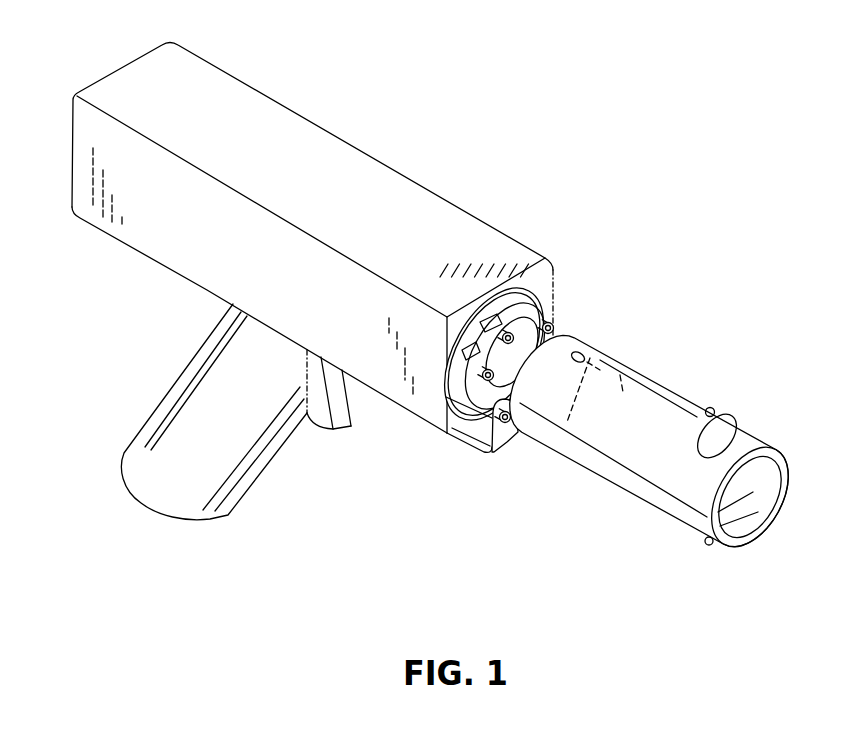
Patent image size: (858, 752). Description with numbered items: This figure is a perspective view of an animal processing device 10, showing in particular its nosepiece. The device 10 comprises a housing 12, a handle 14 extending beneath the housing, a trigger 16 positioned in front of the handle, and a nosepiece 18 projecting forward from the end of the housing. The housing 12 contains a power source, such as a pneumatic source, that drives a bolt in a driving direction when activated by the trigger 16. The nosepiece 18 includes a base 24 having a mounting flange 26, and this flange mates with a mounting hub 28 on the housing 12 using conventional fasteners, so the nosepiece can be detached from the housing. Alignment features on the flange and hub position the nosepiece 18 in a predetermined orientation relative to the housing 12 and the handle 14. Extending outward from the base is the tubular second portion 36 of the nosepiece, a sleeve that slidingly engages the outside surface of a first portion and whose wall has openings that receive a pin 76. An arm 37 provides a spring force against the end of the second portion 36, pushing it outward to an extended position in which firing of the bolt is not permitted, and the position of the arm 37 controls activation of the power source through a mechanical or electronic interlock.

The device 10 is at (497, 165).
The housing 12 is at (287, 137).
The handle 14 is at (180, 430).
The trigger 16 is at (317, 424).
The nosepiece 18 is at (673, 392).
The base 24 is at (527, 347).
The mounting flange 26 is at (511, 314).
The mounting hub 28 is at (486, 312).
The second portion 36 is at (654, 473).
The arm 37 is at (503, 438).
The pin 76 is at (714, 416).